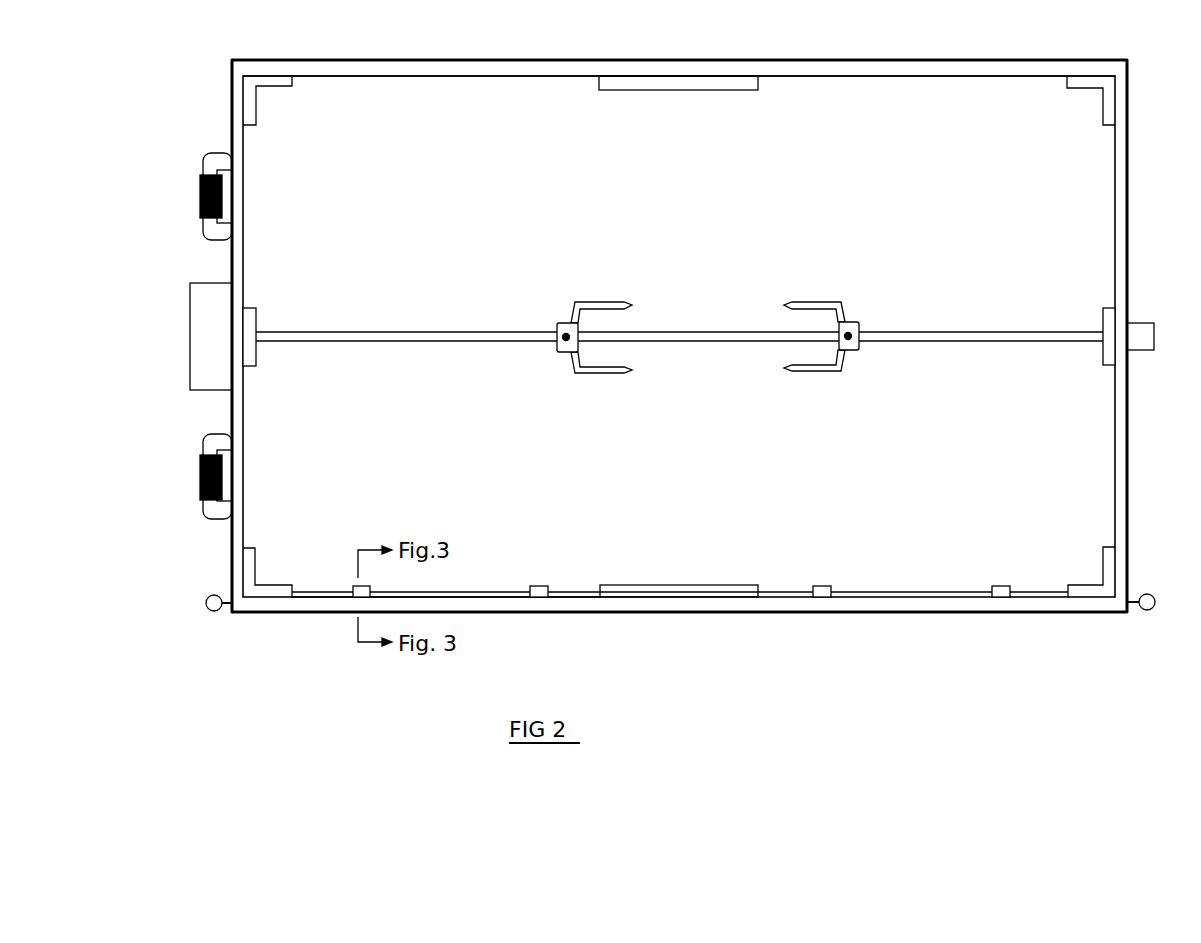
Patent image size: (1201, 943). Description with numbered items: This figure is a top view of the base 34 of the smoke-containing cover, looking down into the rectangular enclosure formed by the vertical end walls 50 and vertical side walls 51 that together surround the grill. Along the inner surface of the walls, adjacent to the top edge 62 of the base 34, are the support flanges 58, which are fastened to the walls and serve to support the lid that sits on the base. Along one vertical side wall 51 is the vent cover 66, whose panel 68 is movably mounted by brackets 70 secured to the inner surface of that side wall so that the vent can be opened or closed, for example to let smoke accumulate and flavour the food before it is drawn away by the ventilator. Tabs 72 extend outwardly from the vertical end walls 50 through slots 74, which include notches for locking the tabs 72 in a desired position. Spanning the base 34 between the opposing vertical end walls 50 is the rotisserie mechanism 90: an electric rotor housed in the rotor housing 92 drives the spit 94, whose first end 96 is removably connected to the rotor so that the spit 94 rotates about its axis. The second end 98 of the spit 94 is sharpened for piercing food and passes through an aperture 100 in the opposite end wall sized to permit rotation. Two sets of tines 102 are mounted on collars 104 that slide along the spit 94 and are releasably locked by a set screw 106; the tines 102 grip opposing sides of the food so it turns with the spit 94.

The base 34 is at (887, 640).
The vertical end walls 50 is at (232, 543).
The vertical side walls 51 is at (891, 76).
The support flanges 58 is at (260, 86).
The top edge 62 is at (779, 70).
The vent cover 66 is at (505, 585).
The panel 68 is at (467, 595).
The brackets 70 is at (355, 584).
The tabs 72 is at (206, 612).
The slots 74 is at (700, 329).
The rotisserie mechanism 90 is at (714, 345).
The rotor housing 92 is at (200, 317).
The spit 94 is at (408, 330).
The first end 96 is at (258, 328).
The second end 98 is at (1103, 328).
The aperture 100 is at (1137, 345).
The tines 102 is at (585, 372).
The collar 104 is at (558, 323).
The set screw 106 is at (566, 340).